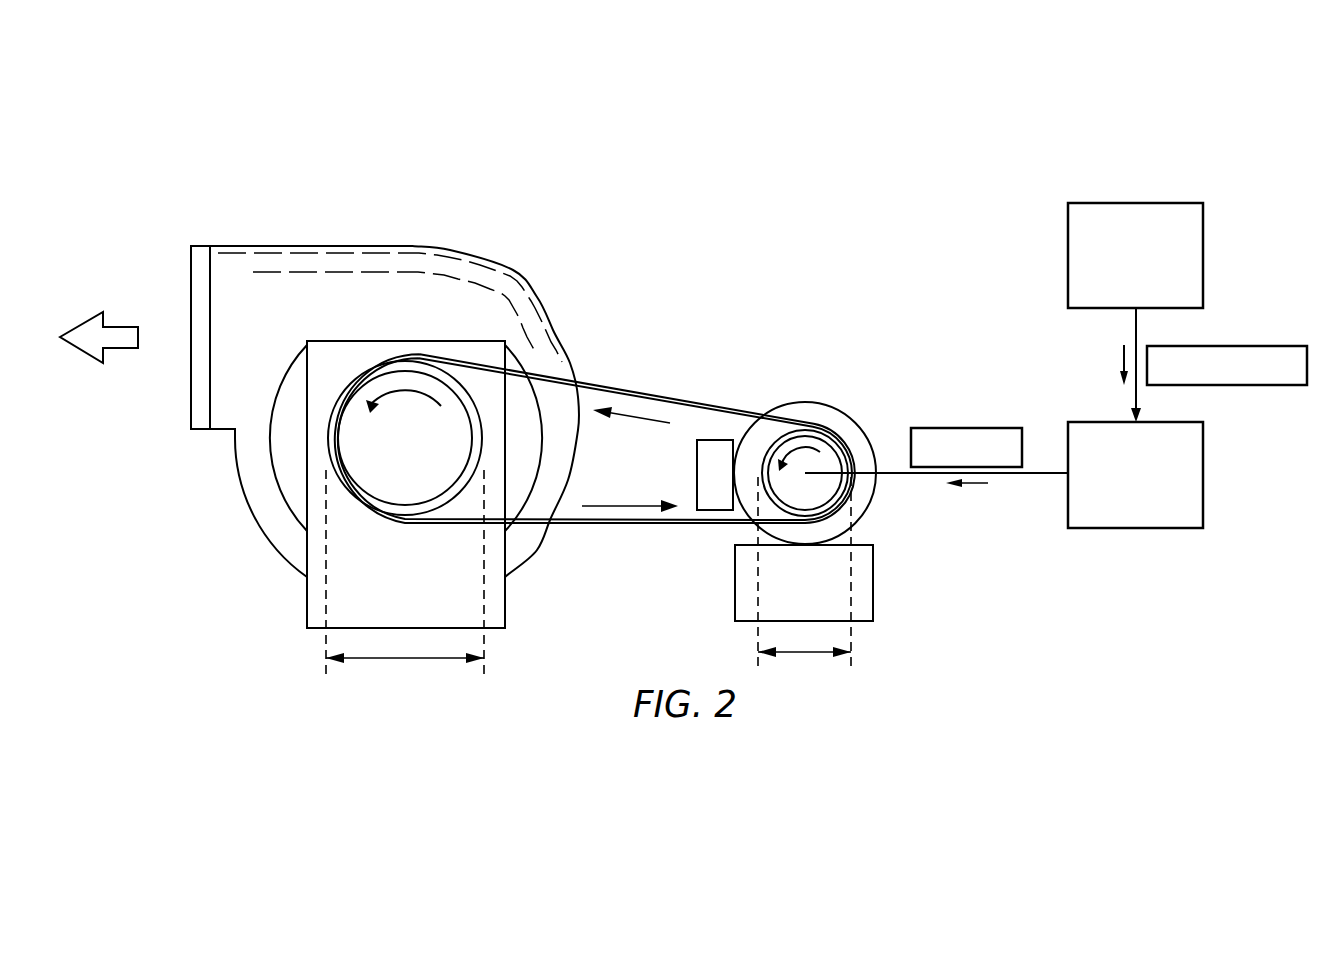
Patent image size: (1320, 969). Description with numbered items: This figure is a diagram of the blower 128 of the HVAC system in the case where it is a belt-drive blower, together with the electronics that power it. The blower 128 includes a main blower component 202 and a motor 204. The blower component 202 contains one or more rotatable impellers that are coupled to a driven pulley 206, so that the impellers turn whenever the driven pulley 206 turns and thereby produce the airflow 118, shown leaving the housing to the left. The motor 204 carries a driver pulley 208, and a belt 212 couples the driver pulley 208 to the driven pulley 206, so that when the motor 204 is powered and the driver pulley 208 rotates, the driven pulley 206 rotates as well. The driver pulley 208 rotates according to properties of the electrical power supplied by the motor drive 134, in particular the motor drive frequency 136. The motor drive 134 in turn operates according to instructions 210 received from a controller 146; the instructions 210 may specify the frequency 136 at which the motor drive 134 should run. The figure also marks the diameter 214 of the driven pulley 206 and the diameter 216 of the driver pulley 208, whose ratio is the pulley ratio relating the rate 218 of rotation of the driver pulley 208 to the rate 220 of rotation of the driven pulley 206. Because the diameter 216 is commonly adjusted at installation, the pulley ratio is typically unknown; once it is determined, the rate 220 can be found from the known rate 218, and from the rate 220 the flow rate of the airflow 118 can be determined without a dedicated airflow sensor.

The airflow 118 is at (112, 349).
The blower 128 is at (738, 126).
The motor drive 134 is at (1135, 475).
The motor drive frequency 136 is at (980, 428).
The controller 146 is at (1135, 312).
The main blower component 202 is at (414, 247).
The motor 204 is at (833, 409).
The driven pulley 206 is at (453, 505).
The driver pulley 208 is at (855, 527).
The instructions 210 is at (1250, 386).
The belt 212 is at (692, 396).
The diameter of the driven pulley 214 is at (403, 659).
The diameter of the driver pulley 216 is at (805, 653).
The rate of rotation of the driver pulley 218 is at (782, 492).
The rate of rotation of the driven pulley 220 is at (408, 434).